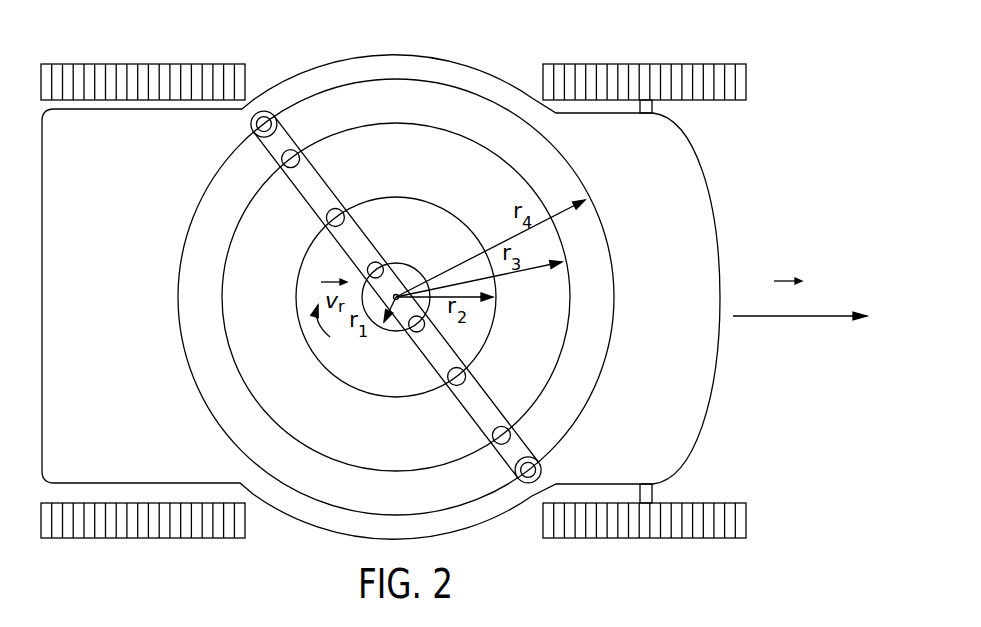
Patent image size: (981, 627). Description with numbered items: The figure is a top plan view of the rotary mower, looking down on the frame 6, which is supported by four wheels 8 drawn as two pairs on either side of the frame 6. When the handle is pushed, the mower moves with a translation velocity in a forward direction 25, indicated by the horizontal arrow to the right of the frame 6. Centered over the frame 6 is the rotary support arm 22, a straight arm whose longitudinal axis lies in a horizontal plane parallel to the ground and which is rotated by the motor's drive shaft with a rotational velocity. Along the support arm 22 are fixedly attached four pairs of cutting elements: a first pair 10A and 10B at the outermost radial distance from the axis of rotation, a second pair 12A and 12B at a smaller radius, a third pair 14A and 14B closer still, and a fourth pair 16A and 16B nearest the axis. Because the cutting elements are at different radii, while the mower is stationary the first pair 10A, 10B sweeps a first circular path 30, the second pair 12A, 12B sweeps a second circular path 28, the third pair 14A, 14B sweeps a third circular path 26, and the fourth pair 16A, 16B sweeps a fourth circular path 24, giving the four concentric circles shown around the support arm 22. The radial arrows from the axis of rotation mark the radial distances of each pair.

The frame 6 is at (708, 200).
The wheels 8 is at (172, 64).
The cutting element 10A is at (250, 125).
The cutting element 10B is at (541, 468).
The cutting element 12A is at (281, 167).
The cutting element 12B is at (510, 429).
The cutting element 14A is at (326, 226).
The cutting element 14B is at (468, 374).
The cutting element 16A is at (367, 275).
The cutting element 16B is at (428, 331).
The rotary support arm 22 is at (323, 193).
The fourth circular path 24 is at (392, 334).
The forward direction 25 is at (800, 313).
The third circular path 26 is at (373, 384).
The second circular path 28 is at (337, 440).
The first circular path 30 is at (207, 420).